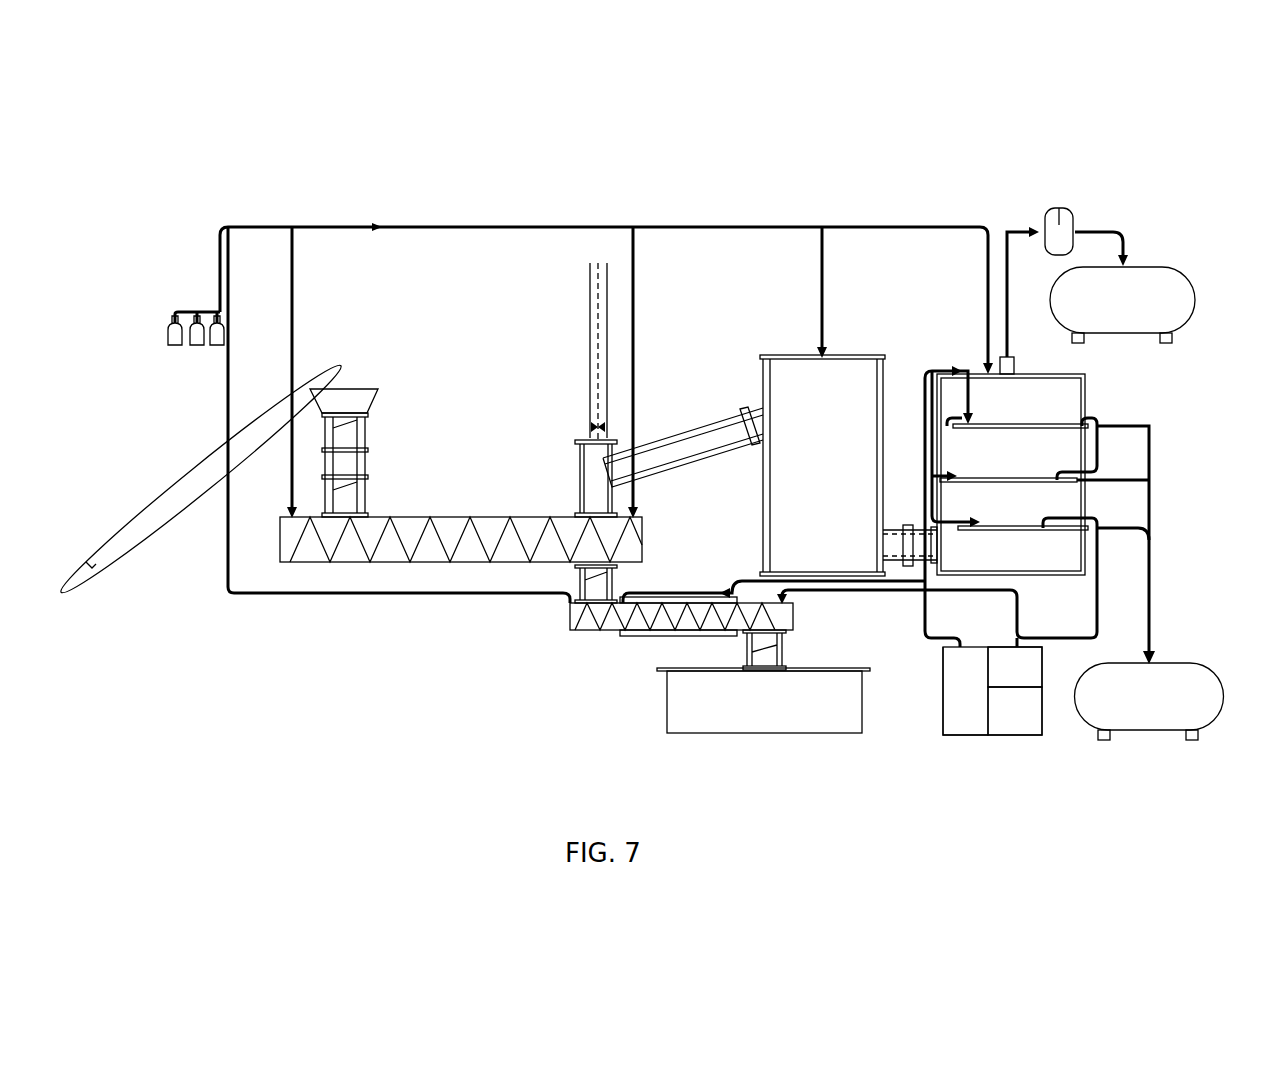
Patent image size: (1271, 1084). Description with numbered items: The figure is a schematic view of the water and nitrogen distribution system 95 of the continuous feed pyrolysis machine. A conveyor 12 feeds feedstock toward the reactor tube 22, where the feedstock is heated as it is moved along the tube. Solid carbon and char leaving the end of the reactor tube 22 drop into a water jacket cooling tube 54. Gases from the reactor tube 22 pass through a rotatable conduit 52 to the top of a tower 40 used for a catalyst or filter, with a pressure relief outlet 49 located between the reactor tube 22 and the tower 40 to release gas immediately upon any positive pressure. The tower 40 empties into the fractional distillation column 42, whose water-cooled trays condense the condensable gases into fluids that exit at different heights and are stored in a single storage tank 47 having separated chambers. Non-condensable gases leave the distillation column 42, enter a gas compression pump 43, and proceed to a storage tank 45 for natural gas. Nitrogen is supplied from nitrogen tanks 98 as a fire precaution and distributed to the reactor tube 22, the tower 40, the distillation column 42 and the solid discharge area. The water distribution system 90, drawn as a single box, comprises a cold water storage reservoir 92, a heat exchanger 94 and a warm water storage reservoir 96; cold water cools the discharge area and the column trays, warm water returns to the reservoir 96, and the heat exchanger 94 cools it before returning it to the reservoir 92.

The water and nitrogen distribution system 95 is at (283, 195).
The nitrogen tanks 98 is at (197, 338).
The conveyor 12 is at (160, 516).
The reactor tube 22 is at (428, 553).
The pressure relief outlet 49 is at (600, 333).
The conduit 52 is at (690, 443).
The tower 40 is at (835, 400).
The fractional distillation column 42 is at (1030, 395).
The gas compression pump 43 is at (1058, 218).
The storage tank 45 is at (1130, 310).
The storage tank 47 is at (1130, 708).
The water jacket cooling tube 54 is at (640, 615).
The water distribution system 90 is at (961, 754).
The cold water storage reservoir 92 is at (957, 720).
The heat exchanger 94 is at (1015, 712).
The warm water storage reservoir 96 is at (1020, 665).